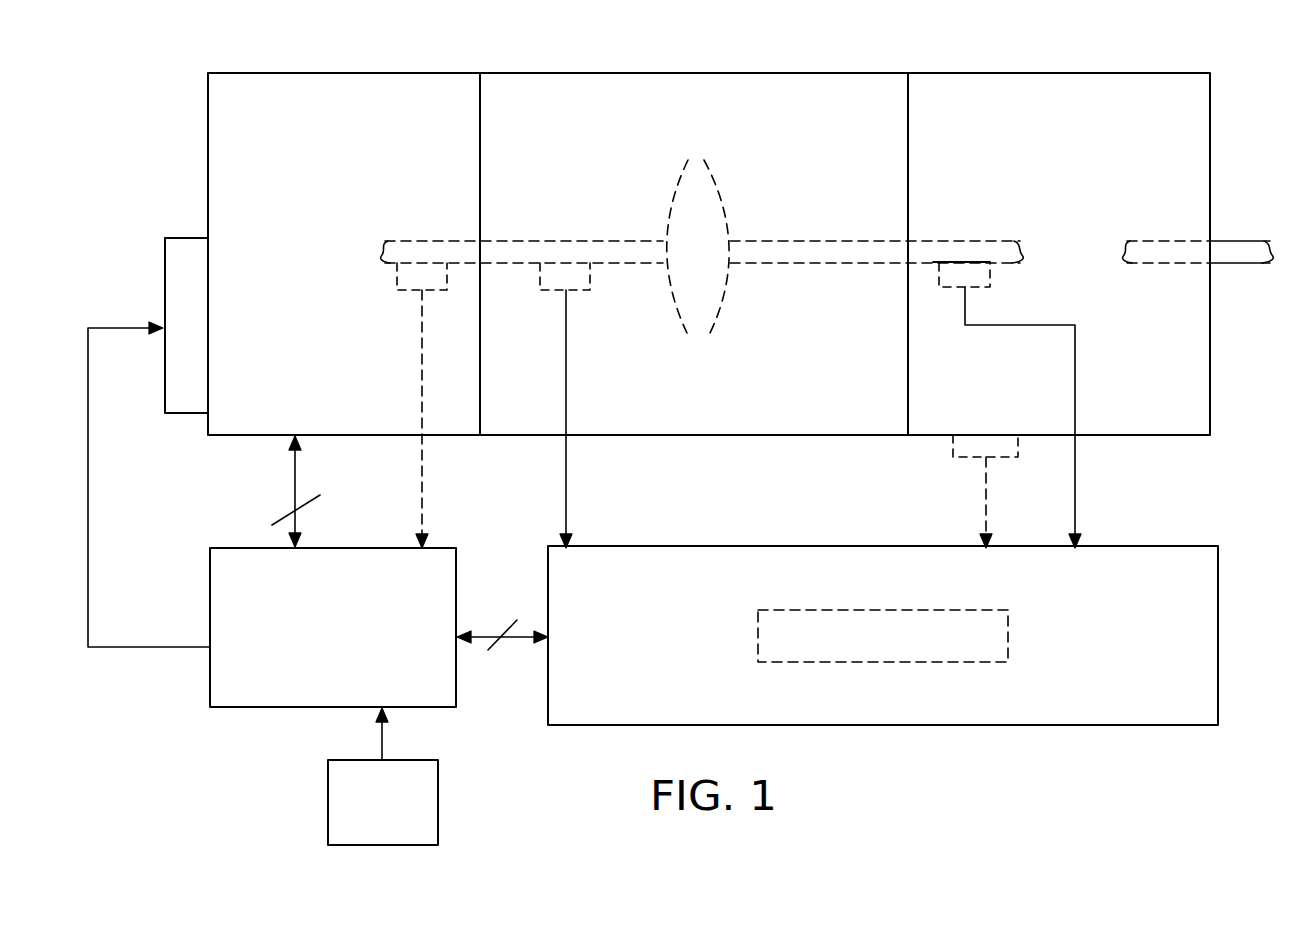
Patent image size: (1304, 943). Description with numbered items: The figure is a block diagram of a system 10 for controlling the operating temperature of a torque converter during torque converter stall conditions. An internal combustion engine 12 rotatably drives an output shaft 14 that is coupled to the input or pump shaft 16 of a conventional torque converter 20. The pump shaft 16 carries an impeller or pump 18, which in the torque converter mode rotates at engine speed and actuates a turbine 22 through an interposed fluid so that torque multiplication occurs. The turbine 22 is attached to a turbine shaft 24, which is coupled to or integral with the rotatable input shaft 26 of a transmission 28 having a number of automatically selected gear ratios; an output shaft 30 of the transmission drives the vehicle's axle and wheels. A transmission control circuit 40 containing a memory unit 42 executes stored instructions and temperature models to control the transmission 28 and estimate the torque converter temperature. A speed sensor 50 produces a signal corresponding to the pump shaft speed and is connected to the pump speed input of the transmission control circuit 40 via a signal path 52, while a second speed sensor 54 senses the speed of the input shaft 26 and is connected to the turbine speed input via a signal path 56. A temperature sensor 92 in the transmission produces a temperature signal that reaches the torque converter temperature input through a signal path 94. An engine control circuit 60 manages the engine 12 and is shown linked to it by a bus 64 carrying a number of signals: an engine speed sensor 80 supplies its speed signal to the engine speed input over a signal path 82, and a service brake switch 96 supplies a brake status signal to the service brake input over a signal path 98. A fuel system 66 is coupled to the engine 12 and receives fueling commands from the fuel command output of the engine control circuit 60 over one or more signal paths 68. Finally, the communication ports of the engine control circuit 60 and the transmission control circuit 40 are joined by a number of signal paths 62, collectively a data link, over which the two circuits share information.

The system 10 is at (165, 764).
The internal combustion engine 12 is at (208, 167).
The output shaft 14 is at (430, 240).
The input or pump shaft 16 is at (546, 240).
The impeller or pump 18 is at (684, 176).
The torque converter 20 is at (648, 437).
The turbine 22 is at (712, 176).
The turbine shaft 24 is at (823, 240).
The input shaft 26 is at (953, 240).
The transmission 28 is at (1210, 108).
The output shaft 30 is at (1238, 240).
The transmission control circuit 40 is at (1218, 617).
The memory unit 42 is at (758, 620).
The speed sensor 50 is at (556, 292).
The signal path 52 is at (566, 462).
The second speed sensor 54 is at (990, 274).
The signal path 56 is at (1075, 466).
The engine control circuit 60 is at (280, 709).
The signal paths 62 is at (520, 646).
The engine control bus 64 is at (296, 472).
The fuel system 66 is at (188, 414).
The signal paths 68 is at (151, 645).
The engine speed sensor 80 is at (397, 277).
The signal path 82 is at (420, 334).
The temperature sensor 92 is at (953, 448).
The signal path 94 is at (986, 500).
The service brake switch 96 is at (440, 797).
The signal path 98 is at (383, 742).